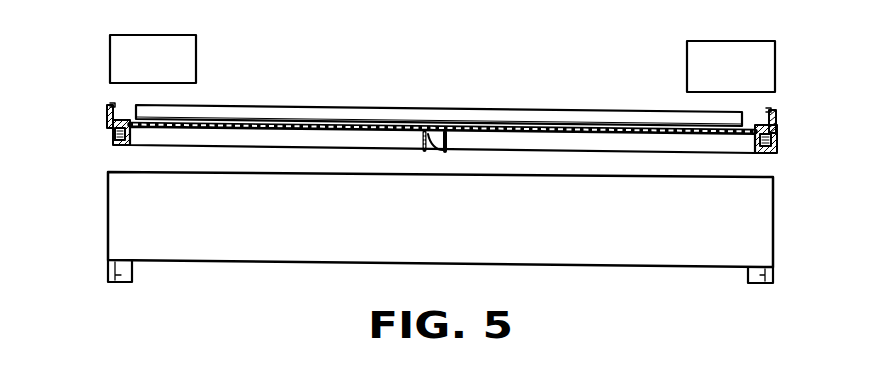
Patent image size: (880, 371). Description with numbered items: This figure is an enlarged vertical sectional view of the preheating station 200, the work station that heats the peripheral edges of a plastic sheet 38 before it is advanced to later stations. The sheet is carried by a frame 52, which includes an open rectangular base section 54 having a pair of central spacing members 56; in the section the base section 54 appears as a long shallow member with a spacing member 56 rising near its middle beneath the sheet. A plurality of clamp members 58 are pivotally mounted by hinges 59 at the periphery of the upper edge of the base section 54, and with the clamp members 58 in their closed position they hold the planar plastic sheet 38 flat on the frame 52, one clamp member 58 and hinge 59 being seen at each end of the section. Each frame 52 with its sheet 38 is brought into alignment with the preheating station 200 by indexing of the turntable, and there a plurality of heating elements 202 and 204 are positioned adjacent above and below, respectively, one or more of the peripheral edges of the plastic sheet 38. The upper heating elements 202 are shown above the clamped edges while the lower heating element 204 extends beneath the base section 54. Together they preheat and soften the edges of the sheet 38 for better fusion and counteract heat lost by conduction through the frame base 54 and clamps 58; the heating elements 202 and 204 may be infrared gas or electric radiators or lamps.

The preheating station 200 is at (770, 321).
The heating element 202 is at (118, 53).
The plastic sheet 38 is at (515, 128).
The frame 52 is at (184, 152).
The base section 54 is at (334, 140).
The central spacing member 56 is at (445, 146).
The clamp member 58 is at (110, 104).
The hinge 59 is at (108, 131).
The heating element 204 is at (498, 231).